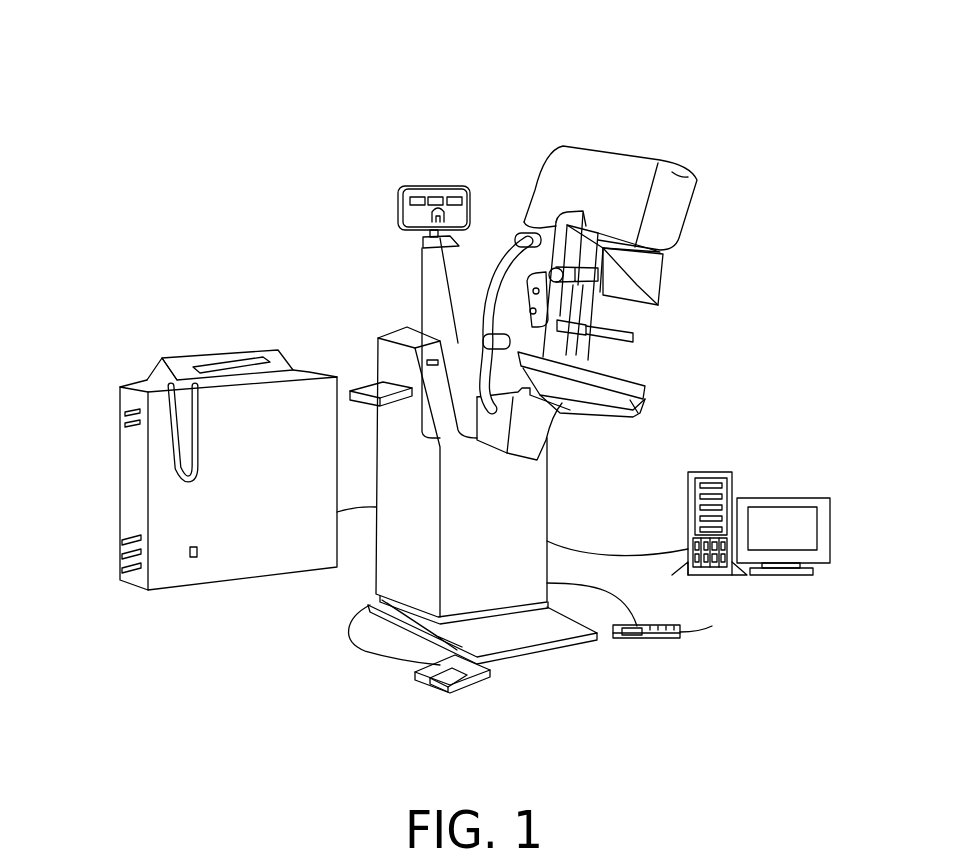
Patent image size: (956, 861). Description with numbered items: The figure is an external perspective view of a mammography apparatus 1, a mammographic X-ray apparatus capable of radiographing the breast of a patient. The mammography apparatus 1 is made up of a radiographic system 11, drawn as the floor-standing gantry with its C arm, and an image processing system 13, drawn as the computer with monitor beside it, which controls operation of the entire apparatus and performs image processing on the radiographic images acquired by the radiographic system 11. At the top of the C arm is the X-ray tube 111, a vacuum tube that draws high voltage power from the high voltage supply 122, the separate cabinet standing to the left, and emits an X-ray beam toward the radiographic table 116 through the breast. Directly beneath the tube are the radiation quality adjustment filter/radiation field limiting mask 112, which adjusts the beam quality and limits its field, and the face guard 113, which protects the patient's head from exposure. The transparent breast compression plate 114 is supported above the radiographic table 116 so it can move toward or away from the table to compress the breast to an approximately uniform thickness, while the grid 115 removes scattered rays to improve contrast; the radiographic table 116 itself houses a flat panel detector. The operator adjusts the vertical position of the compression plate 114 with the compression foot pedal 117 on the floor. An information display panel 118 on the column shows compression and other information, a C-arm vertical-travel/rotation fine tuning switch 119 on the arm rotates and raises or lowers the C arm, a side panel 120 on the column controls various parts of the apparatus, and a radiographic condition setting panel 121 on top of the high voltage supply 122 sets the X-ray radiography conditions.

The mammography apparatus 1 is at (257, 103).
The radiographic system 11 is at (457, 164).
The image processing system 13 is at (781, 497).
The X-ray tube 111 is at (683, 198).
The radiation quality adjustment filter/radiation field limiting mask 112 is at (655, 240).
The face guard 113 is at (652, 284).
The breast compression plate 114 is at (637, 341).
The grid 115 is at (645, 390).
The radiographic table 116 is at (636, 408).
The compression foot pedal 117 is at (682, 633).
The information display panel 118 is at (397, 198).
The C-arm vertical-travel/rotation fine tuning switch 119 is at (483, 340).
The side panel 120 is at (357, 388).
The radiographic condition setting panel 121 is at (171, 358).
The high voltage supply 122 is at (120, 413).